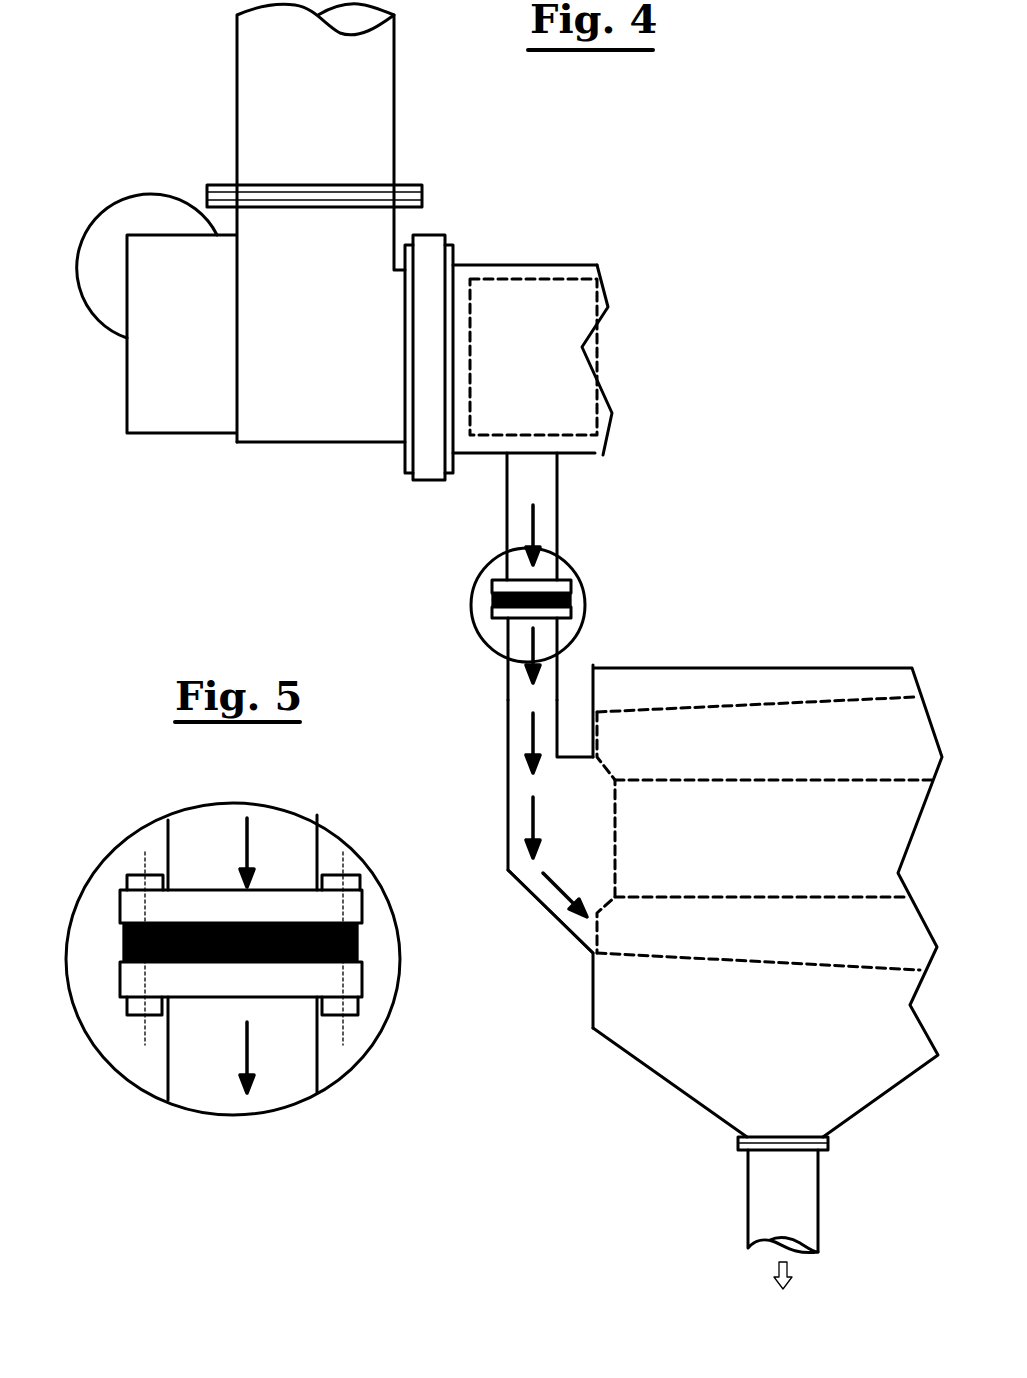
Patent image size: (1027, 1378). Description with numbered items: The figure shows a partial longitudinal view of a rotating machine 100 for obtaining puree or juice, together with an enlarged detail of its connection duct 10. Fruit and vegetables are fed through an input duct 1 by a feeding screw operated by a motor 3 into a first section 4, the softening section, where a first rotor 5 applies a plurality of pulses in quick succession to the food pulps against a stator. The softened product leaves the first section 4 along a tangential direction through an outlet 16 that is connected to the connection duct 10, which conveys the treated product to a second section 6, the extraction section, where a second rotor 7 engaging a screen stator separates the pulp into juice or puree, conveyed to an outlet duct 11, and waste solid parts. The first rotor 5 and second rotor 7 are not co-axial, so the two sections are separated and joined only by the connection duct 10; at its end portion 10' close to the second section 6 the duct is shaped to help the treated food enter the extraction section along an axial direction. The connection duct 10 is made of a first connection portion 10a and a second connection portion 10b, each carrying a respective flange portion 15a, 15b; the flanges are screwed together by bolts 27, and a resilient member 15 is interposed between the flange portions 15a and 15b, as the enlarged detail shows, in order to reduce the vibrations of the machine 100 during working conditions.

In FIG. 4, the input duct 1 is at (337, 397).
In FIG. 4, the motor 3 is at (150, 213).
In FIG. 4, the first section 4 is at (490, 237).
In FIG. 4, the first rotor 5 is at (548, 278).
In FIG. 4, the second section 6 is at (785, 647).
In FIG. 4, the second rotor 7 is at (763, 715).
In FIG. 4, the connection duct 10 is at (504, 864).
In FIG. 4, the end portion 10' is at (525, 911).
In FIG. 4, the first connection portion 10a is at (575, 526).
In FIG. 5, the first connection portion 10a is at (199, 814).
In FIG. 4, the second connection portion 10b is at (477, 700).
In FIG. 5, the second connection portion 10b is at (191, 1107).
In FIG. 4, the outlet duct 11 is at (723, 1197).
In FIG. 4, the resilient member 15 is at (572, 603).
In FIG. 5, the resilient member 15 is at (107, 933).
In FIG. 4, the flange portion 15a is at (497, 582).
In FIG. 5, the flange portion 15a is at (357, 905).
In FIG. 4, the flange portion 15b is at (497, 620).
In FIG. 5, the flange portion 15b is at (355, 980).
In FIG. 4, the outlet 16 is at (533, 437).
In FIG. 5, the bolts 27 is at (121, 868).
In FIG. 4, the machine 100 is at (781, 343).